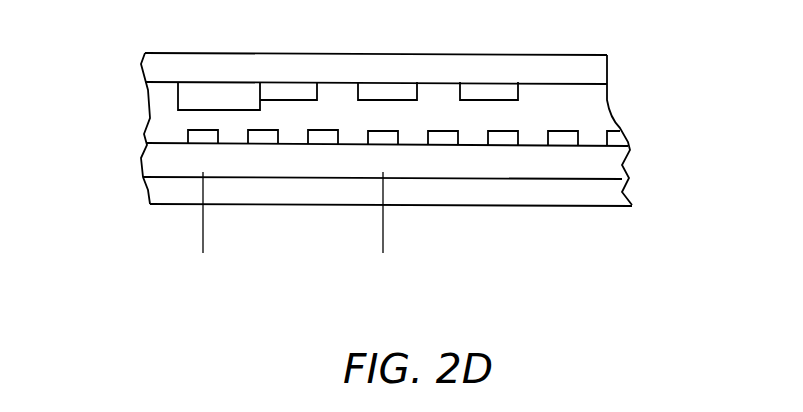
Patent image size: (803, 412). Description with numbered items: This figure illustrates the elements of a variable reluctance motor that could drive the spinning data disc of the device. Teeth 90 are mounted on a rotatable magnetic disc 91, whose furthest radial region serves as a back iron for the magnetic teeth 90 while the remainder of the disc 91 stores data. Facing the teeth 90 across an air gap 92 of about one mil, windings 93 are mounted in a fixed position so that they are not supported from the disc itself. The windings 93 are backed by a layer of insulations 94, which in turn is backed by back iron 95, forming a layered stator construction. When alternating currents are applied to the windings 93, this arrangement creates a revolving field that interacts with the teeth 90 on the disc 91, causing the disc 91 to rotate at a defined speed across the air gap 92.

The teeth 90 is at (283, 95).
The rotatable magnetic disc 91 is at (380, 68).
The air gap 92 is at (186, 120).
The windings 93 is at (141, 158).
The insulations 94 is at (603, 162).
The back iron 95 is at (607, 190).